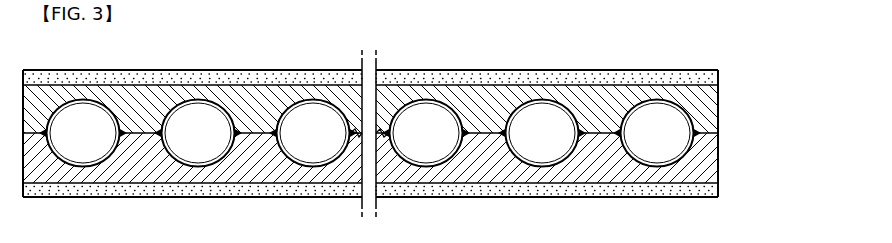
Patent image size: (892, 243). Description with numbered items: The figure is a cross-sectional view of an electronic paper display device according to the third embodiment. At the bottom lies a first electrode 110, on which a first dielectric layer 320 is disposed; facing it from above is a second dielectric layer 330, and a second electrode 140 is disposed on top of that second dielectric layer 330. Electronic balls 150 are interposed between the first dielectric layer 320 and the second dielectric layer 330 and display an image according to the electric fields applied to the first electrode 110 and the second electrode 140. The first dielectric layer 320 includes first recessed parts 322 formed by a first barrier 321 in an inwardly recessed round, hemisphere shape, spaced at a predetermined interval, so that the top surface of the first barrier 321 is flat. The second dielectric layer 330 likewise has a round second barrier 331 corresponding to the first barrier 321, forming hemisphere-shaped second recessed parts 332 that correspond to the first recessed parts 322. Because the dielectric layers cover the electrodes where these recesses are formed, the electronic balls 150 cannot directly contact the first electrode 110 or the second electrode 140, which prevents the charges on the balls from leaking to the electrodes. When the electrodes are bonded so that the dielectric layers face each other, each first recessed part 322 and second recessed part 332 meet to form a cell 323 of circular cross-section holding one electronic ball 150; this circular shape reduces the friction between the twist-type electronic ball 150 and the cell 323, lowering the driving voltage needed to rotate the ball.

The first electrode 110 is at (715, 187).
The second electrode 140 is at (715, 77).
The electronic ball 150 is at (658, 155).
The first dielectric layer 320 is at (411, 185).
The first barrier 321 is at (483, 138).
The first recessed part 322 is at (538, 168).
The cell 323 is at (623, 157).
The second dielectric layer 330 is at (411, 81).
The second barrier 331 is at (483, 128).
The second recessed part 332 is at (542, 99).